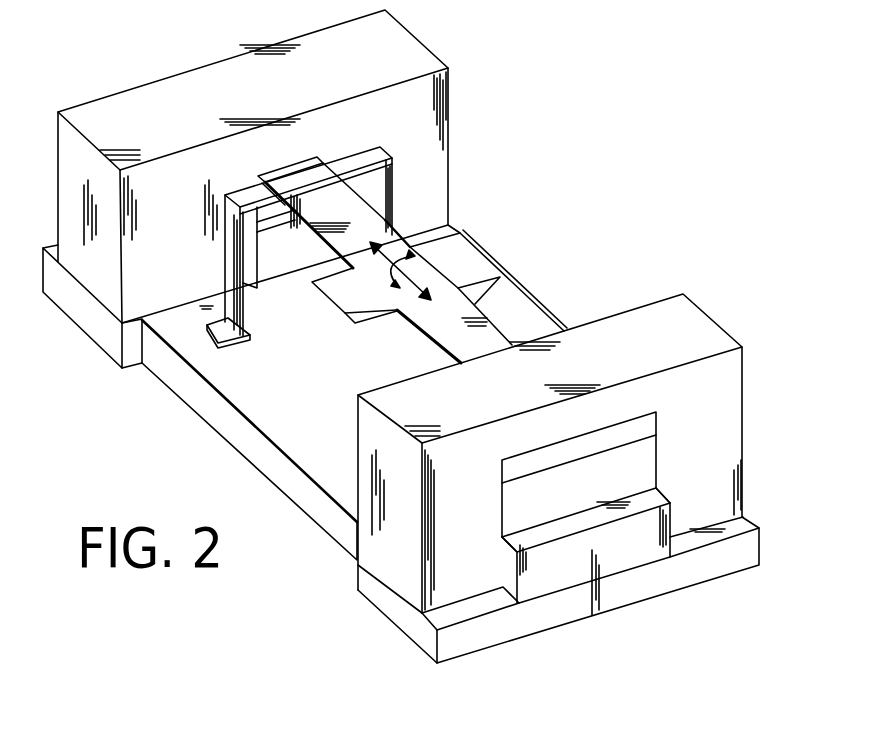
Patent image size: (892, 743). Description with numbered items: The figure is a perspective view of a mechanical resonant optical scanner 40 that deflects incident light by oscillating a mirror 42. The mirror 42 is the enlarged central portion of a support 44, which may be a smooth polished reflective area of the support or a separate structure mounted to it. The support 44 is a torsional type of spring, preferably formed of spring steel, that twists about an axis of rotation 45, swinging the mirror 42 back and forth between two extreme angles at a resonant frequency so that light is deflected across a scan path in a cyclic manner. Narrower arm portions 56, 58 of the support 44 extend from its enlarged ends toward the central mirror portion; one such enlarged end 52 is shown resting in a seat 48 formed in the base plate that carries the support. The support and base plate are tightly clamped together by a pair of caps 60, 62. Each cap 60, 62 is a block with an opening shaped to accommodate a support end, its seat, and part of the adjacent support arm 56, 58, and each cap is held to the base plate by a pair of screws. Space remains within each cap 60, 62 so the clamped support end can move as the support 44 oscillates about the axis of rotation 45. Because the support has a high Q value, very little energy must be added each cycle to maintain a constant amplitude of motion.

The optical scanner 40 is at (663, 130).
The mirror 42 is at (473, 265).
The support 44 is at (390, 233).
The axis of rotation 45 is at (413, 280).
The seat 48 is at (609, 493).
The end of the support 52 is at (650, 428).
The arm portion 56 is at (484, 353).
The arm portion 58 is at (346, 215).
The cap 60 is at (707, 327).
The cap 62 is at (427, 53).